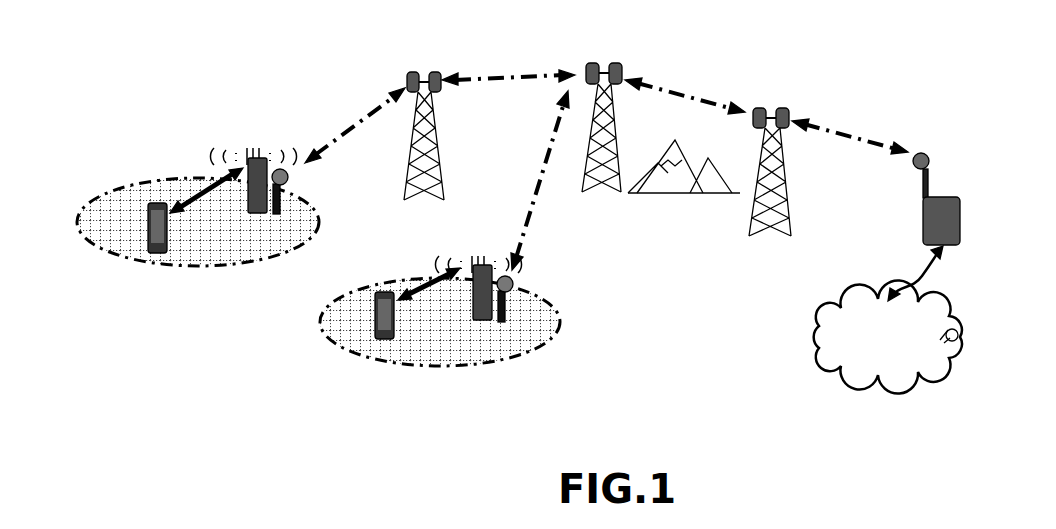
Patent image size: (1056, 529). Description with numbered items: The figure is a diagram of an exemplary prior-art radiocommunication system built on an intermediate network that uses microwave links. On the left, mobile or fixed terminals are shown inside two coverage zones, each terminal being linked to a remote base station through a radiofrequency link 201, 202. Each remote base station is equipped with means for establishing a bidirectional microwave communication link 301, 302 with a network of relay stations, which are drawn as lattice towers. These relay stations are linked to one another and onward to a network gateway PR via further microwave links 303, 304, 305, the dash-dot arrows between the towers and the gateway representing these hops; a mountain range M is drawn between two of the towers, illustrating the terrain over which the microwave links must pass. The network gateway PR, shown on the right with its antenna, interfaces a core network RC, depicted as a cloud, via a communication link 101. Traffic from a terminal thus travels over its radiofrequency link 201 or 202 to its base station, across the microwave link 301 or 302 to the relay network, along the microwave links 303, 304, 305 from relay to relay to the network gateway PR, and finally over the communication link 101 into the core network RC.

The communication link 101 is at (905, 275).
The radiofrequency link 201 is at (187, 180).
The radiofrequency link 202 is at (428, 278).
The bidirectional microwave communication link 301 is at (345, 130).
The bidirectional microwave communication link 302 is at (545, 173).
The microwave link 303 is at (503, 73).
The microwave link 304 is at (677, 95).
The microwave link 305 is at (848, 140).
The mountains / terrain obstacle M is at (673, 193).
The network gateway PR is at (962, 232).
The core network RC is at (962, 333).